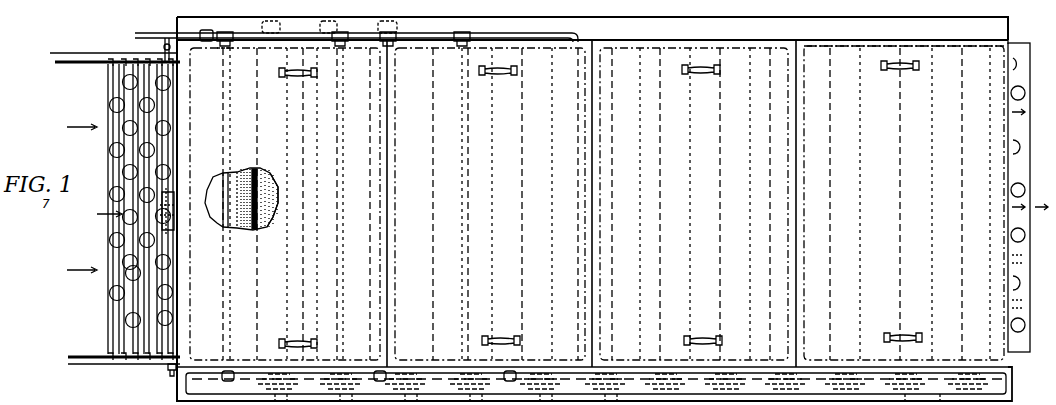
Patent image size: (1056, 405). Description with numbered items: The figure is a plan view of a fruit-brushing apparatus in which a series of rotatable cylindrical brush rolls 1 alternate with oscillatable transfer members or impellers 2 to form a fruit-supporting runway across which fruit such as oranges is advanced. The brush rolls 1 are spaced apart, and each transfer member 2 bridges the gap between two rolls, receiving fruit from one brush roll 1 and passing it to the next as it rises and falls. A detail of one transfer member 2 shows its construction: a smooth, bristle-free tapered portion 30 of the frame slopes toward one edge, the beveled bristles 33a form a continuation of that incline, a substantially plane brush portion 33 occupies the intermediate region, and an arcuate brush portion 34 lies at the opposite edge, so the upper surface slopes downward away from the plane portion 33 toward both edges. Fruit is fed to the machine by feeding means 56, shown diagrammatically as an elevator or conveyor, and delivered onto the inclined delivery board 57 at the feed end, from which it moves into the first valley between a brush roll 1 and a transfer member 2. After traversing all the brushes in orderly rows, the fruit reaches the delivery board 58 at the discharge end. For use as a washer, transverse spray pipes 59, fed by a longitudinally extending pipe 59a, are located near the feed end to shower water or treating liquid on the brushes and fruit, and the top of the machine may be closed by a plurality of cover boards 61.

The brush roll 1 is at (268, 223).
The transfer member 2 is at (252, 231).
The angular or tapered portion 30 is at (232, 173).
The plane brush portion 33 is at (237, 229).
The beveled bristle portion 33a is at (256, 160).
The arcuate brush portion 34 is at (262, 172).
The feeding means 56 is at (141, 346).
The delivery board 57 is at (213, 214).
The delivery board 58 is at (1026, 121).
The spray pipe 59 is at (350, 62).
The longitudinally extending pipe 59a is at (137, 36).
The cover board 61 is at (815, 52).